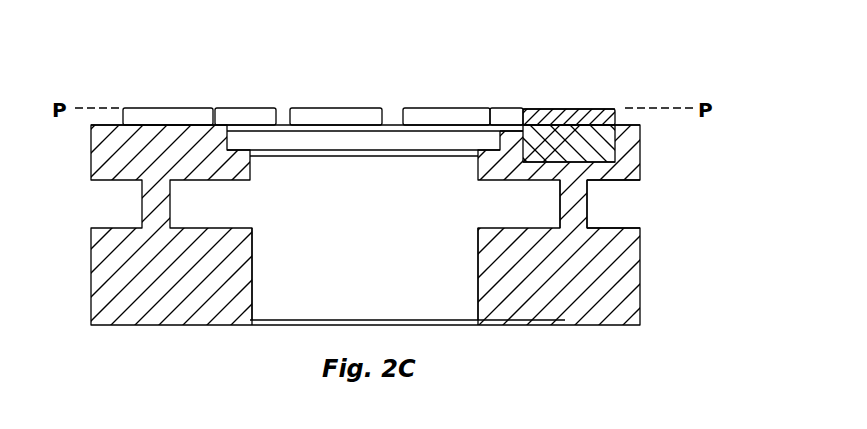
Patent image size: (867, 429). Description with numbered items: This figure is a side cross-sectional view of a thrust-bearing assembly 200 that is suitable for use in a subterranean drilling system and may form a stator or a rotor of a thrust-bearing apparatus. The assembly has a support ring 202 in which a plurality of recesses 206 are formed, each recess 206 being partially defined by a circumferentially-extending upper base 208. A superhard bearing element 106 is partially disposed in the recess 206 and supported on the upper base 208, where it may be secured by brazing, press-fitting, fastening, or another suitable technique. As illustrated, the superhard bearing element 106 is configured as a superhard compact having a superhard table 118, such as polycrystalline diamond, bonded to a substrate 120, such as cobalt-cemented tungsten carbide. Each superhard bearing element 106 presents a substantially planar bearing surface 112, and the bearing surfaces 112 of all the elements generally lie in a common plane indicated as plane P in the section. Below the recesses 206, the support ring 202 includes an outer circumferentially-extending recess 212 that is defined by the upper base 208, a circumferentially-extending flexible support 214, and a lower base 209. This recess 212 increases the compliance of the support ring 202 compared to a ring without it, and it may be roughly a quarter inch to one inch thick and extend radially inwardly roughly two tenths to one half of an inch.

The thrust-bearing assembly 200 is at (175, 43).
The support ring 202 is at (662, 287).
The lower base 209 is at (610, 297).
The flexible support 214 is at (583, 215).
The outer circumferentially-extending recess 212 is at (620, 205).
The recess 206 is at (618, 130).
The upper base 208 is at (573, 167).
The substrate 120 is at (598, 150).
The bearing surface 112 is at (570, 108).
The superhard table 118 is at (588, 108).
The superhard bearing element 106 is at (623, 102).